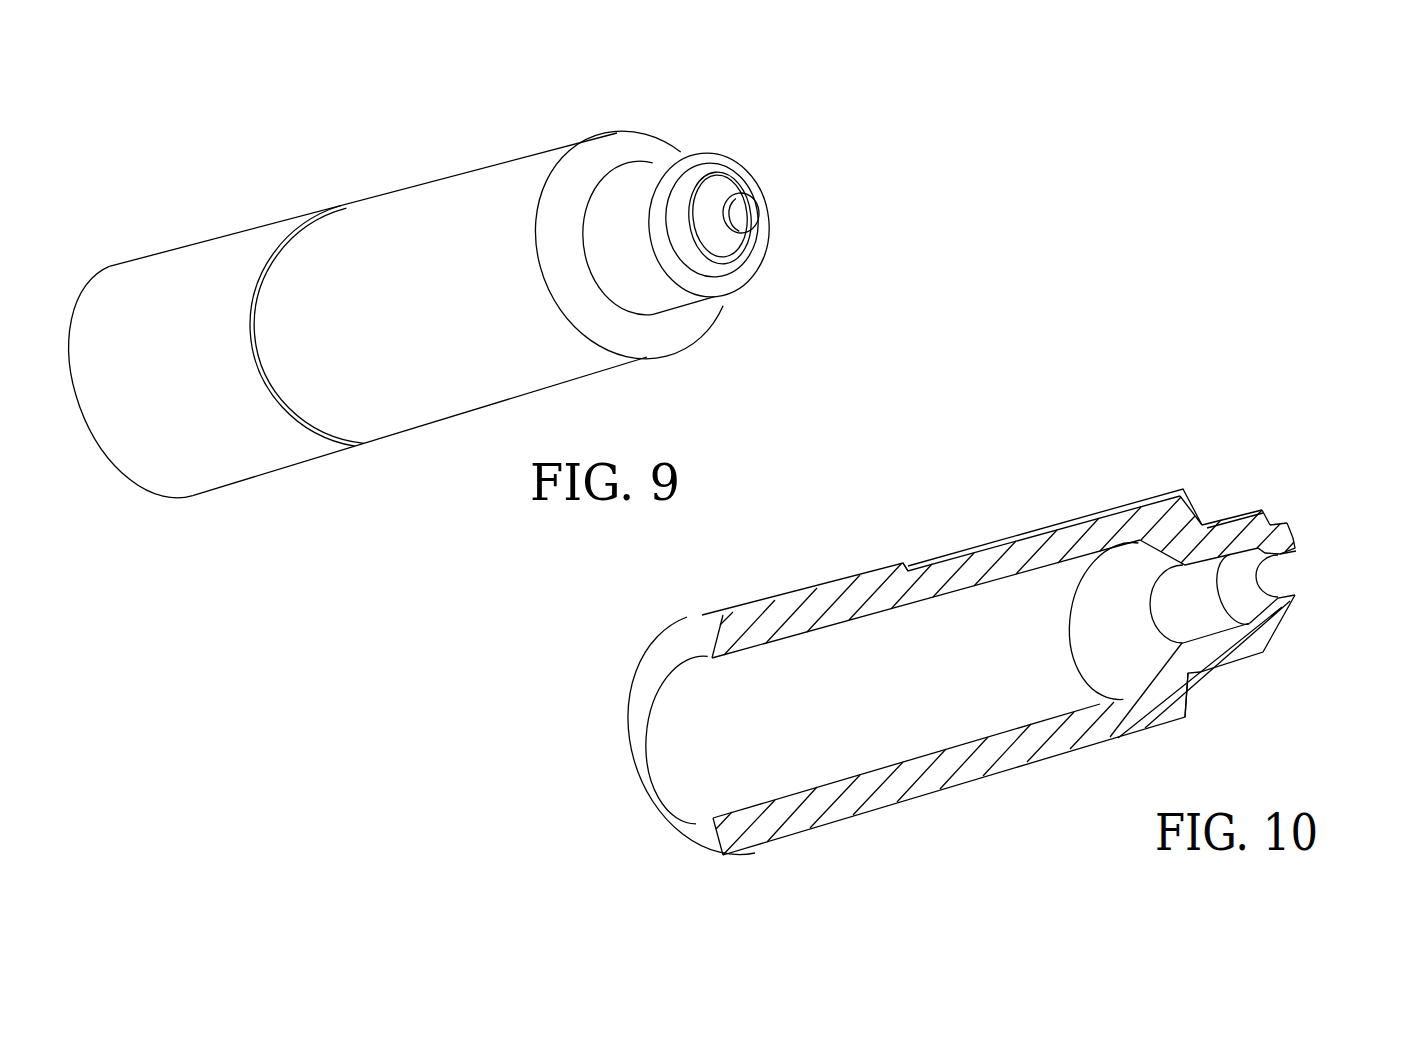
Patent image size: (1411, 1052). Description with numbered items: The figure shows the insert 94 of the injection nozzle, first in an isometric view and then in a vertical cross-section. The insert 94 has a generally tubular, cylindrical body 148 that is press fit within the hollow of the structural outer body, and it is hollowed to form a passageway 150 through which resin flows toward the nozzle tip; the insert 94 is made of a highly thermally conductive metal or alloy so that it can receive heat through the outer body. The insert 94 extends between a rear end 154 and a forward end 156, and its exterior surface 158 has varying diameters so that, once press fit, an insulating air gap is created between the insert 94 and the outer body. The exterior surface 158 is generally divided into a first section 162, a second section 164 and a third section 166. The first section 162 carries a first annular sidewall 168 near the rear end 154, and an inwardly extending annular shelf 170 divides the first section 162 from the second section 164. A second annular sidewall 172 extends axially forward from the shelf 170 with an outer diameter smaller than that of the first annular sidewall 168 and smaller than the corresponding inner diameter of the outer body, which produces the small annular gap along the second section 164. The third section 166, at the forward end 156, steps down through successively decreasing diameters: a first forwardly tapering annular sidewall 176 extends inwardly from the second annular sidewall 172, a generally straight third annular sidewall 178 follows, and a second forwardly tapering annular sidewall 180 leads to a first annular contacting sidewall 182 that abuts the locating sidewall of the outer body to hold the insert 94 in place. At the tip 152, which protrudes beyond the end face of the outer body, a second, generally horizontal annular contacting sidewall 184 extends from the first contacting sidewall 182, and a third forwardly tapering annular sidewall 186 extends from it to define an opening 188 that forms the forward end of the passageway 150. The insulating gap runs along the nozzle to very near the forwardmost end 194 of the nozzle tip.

In FIG. 9, the insert 94 is at (424, 128).
In FIG. 10, the insert 94 is at (1013, 476).
In FIG. 10, the cylindrical body 148 is at (917, 538).
In FIG. 10, the passageway 150 is at (687, 743).
In FIG. 9, the tip 152 is at (749, 292).
In FIG. 10, the tip 152 is at (1300, 508).
In FIG. 10, the rear end 154 is at (761, 870).
In FIG. 10, the forward end 156 is at (1238, 680).
In FIG. 9, the exterior surface 158 is at (380, 228).
In FIG. 9, the first section 162 is at (238, 450).
In FIG. 9, the second section 164 is at (458, 370).
In FIG. 9, the third section 166 is at (705, 315).
In FIG. 9, the first annular sidewall 168 is at (182, 272).
In FIG. 10, the first annular sidewall 168 is at (835, 827).
In FIG. 9, the annular shelf 170 is at (270, 244).
In FIG. 10, the annular shelf 170 is at (908, 803).
In FIG. 9, the second annular sidewall 172 is at (530, 175).
In FIG. 10, the second annular sidewall 172 is at (1052, 758).
In FIG. 9, the first forwardly tapering annular sidewall 176 is at (602, 150).
In FIG. 10, the first forwardly tapering annular sidewall 176 is at (1188, 702).
In FIG. 9, the third annular sidewall 178 is at (652, 165).
In FIG. 10, the third annular sidewall 178 is at (1240, 692).
In FIG. 9, the second forwardly tapering annular sidewall 180 is at (687, 158).
In FIG. 10, the second forwardly tapering annular sidewall 180 is at (1250, 666).
In FIG. 9, the first annular contacting sidewall 182 is at (708, 162).
In FIG. 10, the first annular contacting sidewall 182 is at (1270, 650).
In FIG. 9, the second annular contacting sidewall 184 is at (745, 183).
In FIG. 10, the second annular contacting sidewall 184 is at (1288, 620).
In FIG. 9, the third forwardly tapering annular sidewall 186 is at (747, 243).
In FIG. 10, the third forwardly tapering annular sidewall 186 is at (1298, 603).
In FIG. 9, the opening 188 is at (745, 213).
In FIG. 10, the opening 188 is at (1302, 575).
In FIG. 9, the forwardmost end 194 is at (750, 187).
In FIG. 10, the forwardmost end 194 is at (1298, 538).